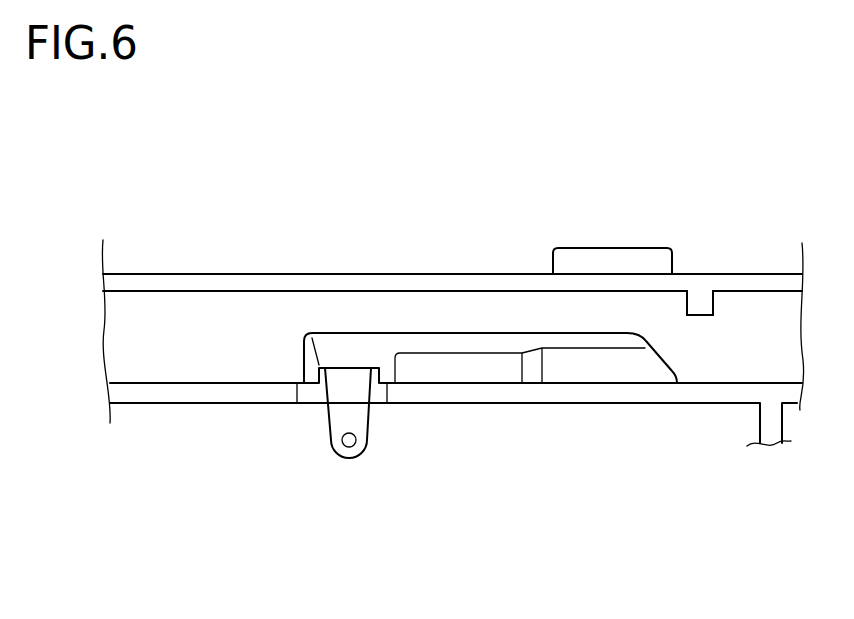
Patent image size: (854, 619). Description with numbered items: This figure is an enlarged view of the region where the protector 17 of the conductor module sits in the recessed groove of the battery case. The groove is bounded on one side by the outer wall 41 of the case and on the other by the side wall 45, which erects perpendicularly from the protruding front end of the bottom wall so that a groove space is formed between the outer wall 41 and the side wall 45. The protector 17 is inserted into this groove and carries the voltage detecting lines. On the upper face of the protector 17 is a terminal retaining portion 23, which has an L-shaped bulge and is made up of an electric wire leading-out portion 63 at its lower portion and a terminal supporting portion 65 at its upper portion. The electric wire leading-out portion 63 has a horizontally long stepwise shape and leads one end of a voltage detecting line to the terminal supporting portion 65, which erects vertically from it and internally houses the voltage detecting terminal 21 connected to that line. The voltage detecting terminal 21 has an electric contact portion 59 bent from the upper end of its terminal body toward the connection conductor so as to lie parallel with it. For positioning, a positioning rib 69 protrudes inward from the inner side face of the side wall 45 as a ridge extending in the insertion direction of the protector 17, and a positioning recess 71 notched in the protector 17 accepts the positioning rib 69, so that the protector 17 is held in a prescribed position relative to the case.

The protector 17 is at (218, 292).
The voltage detecting terminal 21 is at (373, 422).
The terminal retaining portion 23 is at (385, 331).
The outer wall 41 is at (183, 393).
The side wall 45 is at (133, 281).
The electric contact portion 59 is at (338, 452).
The electric wire leading-out portion 63 is at (487, 340).
The terminal supporting portion 65 is at (331, 355).
The positioning rib 69 is at (700, 316).
The positioning recess 71 is at (712, 302).